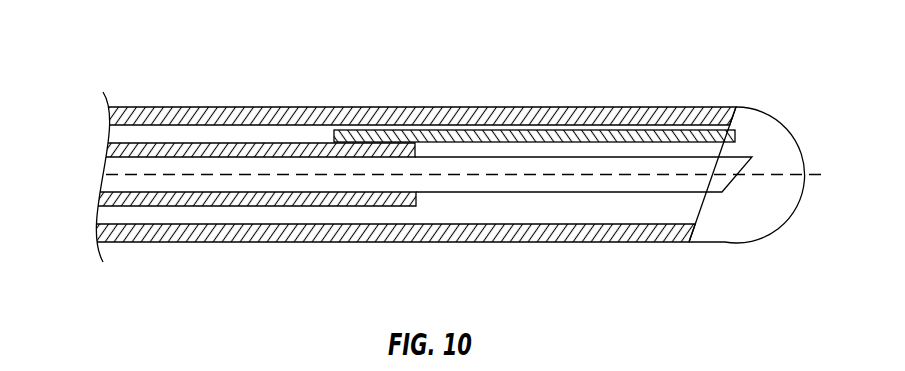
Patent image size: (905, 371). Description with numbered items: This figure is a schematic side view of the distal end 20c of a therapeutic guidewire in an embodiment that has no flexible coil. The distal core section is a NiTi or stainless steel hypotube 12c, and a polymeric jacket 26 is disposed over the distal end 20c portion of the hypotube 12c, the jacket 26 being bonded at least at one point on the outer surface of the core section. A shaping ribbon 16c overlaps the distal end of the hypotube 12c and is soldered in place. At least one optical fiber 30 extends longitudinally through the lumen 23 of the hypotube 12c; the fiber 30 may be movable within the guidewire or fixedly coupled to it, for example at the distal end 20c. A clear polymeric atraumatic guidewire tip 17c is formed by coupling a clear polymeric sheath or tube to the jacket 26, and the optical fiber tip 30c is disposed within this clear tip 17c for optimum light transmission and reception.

The distal end 20c is at (440, 156).
The polymeric jacket 26 is at (388, 108).
The hypotube 12c is at (297, 143).
The lumen 23 is at (117, 168).
The optical fiber 30 is at (108, 182).
The shaping ribbon 16c is at (533, 143).
The optical fiber tip 30c is at (727, 186).
The clear polymeric atraumatic guidewire tip 17c is at (782, 130).